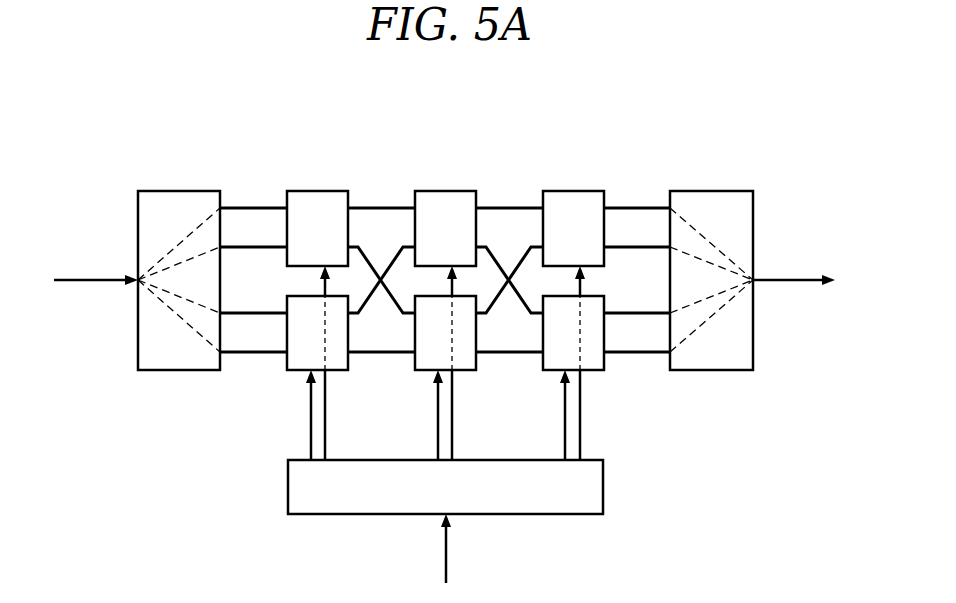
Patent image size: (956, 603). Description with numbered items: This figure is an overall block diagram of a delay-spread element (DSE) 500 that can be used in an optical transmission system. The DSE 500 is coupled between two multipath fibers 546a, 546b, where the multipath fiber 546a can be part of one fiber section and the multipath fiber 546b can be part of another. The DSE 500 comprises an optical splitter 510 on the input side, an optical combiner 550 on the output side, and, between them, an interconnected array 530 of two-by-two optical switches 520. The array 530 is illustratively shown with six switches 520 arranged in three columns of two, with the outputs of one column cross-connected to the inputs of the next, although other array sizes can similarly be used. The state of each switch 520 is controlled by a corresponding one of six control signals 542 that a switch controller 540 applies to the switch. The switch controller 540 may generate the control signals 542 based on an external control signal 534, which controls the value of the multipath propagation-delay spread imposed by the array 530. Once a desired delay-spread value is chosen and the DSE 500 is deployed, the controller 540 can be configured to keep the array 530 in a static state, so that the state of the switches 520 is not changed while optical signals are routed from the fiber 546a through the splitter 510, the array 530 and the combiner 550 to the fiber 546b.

The delay-spread element 500 is at (462, 92).
The optical splitter 510 is at (157, 191).
The 2×2 optical switch 520 is at (300, 241).
The interconnected array 530 is at (445, 241).
The external control signal 534 is at (447, 555).
The switch controller 540 is at (603, 488).
The control signal 542 is at (611, 398).
The multipath fiber 546a is at (87, 283).
The multipath fiber 546b is at (793, 283).
The optical combiner 550 is at (686, 191).